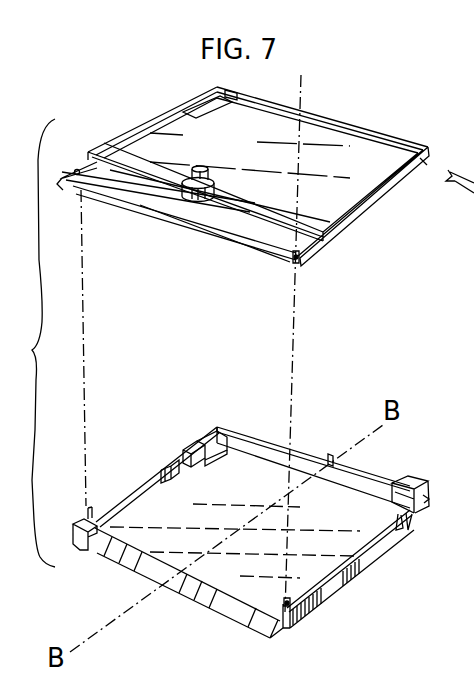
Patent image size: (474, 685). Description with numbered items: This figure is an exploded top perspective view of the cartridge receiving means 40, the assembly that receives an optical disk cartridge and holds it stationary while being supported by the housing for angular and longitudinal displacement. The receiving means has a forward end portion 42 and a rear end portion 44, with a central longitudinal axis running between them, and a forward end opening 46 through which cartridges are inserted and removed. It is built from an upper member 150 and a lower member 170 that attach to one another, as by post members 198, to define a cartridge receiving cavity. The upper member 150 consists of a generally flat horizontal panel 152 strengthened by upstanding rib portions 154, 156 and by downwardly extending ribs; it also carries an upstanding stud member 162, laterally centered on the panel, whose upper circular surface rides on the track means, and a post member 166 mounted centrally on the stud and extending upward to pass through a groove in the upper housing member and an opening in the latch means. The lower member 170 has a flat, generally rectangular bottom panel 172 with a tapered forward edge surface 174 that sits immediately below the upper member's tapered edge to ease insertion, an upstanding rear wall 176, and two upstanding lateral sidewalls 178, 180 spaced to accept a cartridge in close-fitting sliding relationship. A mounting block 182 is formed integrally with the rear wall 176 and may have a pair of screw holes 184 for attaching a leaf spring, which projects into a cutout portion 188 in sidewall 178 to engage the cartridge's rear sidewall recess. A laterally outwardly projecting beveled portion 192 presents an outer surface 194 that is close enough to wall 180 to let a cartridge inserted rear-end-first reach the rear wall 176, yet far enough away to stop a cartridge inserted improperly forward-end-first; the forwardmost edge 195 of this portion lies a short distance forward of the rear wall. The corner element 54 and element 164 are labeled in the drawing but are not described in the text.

The cartridge receiving means 40 is at (127, 92).
The forward end portion 42 is at (307, 257).
The rear end portion 44 is at (412, 172).
The forward end opening 46 is at (116, 558).
The front corner 54 is at (260, 586).
The upper member 150 is at (145, 140).
The horizontal panel 152 is at (352, 137).
The upstanding rib portion 154 is at (360, 214).
The upstanding rib portion 156 is at (253, 215).
The stud member 162 is at (197, 200).
The cross bar 164 is at (180, 183).
The post member 166 is at (200, 163).
The lower member 170 is at (142, 512).
The bottom panel 172 is at (187, 561).
The tapered forward edge surface 174 is at (212, 599).
The rear wall 176 is at (280, 456).
The lateral sidewall 178 is at (333, 586).
The lateral sidewall 180 is at (160, 467).
The mounting block 182 is at (410, 479).
The screw holes 184 is at (428, 498).
The cutout portion 188 is at (404, 515).
The beveled portion 192 is at (196, 451).
The outer surface 194 is at (228, 453).
The forwardmost edge 195 is at (190, 451).
The post members 198 is at (327, 456).